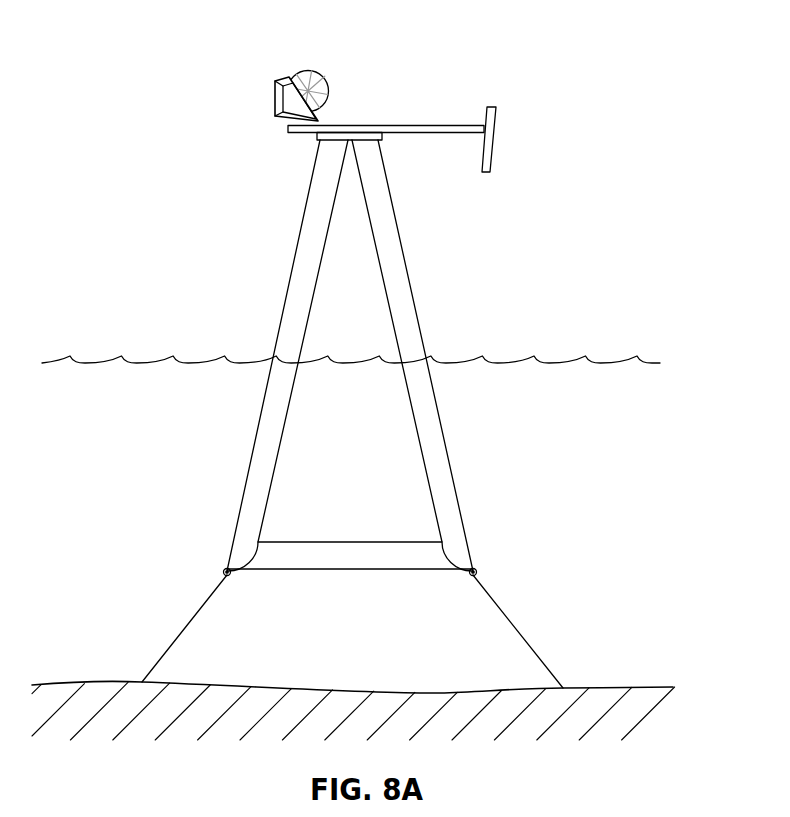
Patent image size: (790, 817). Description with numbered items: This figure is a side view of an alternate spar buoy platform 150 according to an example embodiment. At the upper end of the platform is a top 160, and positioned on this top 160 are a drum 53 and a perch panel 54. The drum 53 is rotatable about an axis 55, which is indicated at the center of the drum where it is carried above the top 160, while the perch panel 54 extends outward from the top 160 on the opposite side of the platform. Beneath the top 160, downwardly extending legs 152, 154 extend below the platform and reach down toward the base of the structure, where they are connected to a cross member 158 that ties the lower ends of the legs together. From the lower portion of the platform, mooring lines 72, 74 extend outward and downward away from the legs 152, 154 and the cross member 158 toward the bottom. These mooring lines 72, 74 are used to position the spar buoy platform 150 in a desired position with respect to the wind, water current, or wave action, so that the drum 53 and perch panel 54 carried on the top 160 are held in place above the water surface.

The drum 53 is at (312, 80).
The axis 55 is at (305, 92).
The perch panel 54 is at (492, 138).
The alternate spar buoy platform 150 is at (236, 139).
The top 160 is at (317, 139).
The leg 152 is at (300, 283).
The leg 154 is at (400, 283).
The cross member 158 is at (362, 557).
The mooring line 72 is at (192, 618).
The mooring line 74 is at (508, 618).